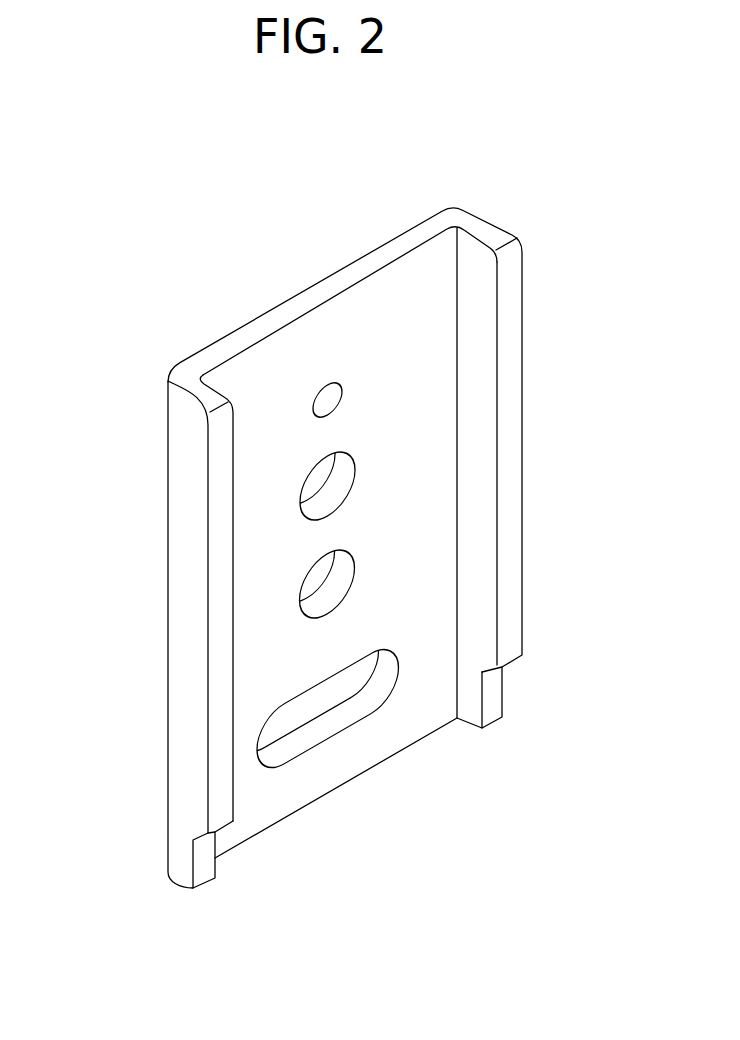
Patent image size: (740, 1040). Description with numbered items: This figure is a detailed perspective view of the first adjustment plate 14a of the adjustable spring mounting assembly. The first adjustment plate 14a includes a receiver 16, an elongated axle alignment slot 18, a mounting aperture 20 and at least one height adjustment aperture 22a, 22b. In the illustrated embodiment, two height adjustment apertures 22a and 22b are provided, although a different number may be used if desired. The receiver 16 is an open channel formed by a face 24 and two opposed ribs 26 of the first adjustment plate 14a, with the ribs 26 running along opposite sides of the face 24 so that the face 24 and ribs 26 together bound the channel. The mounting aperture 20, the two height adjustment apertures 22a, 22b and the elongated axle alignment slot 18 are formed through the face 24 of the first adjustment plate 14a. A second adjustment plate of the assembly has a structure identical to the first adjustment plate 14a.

The first adjustment plate 14a is at (226, 246).
The receiver 16 is at (443, 260).
The elongated axle alignment slot 18 is at (323, 730).
The mounting aperture 20 is at (319, 386).
The height adjustment aperture 22a is at (340, 483).
The height adjustment aperture 22b is at (340, 583).
The face 24 is at (368, 325).
The ribs 26 is at (515, 360).